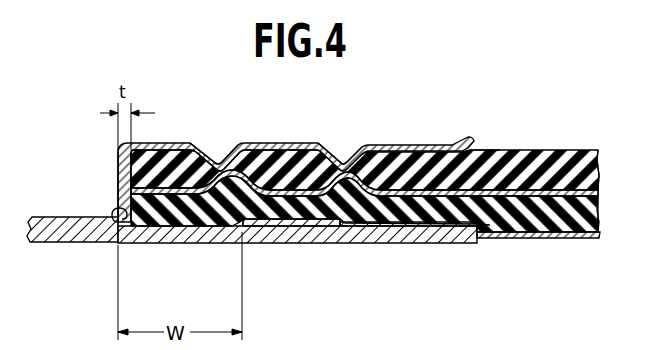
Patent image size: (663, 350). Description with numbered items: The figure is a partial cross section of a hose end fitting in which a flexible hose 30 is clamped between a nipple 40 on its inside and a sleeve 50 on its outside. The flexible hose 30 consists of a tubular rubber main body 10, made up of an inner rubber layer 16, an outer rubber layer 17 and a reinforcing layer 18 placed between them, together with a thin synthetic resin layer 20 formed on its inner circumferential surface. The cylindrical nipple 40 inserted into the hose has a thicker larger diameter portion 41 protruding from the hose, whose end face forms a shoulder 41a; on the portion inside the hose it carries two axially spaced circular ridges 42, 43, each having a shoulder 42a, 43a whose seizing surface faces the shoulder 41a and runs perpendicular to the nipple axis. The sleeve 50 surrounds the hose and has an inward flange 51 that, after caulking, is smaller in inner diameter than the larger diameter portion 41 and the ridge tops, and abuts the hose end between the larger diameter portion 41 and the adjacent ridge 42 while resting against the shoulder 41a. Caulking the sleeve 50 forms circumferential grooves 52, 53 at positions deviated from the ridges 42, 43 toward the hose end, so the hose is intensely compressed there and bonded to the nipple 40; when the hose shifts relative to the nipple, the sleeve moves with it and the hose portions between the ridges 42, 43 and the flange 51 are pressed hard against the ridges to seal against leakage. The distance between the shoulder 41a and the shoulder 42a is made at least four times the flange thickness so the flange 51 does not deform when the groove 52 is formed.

The main body 10 is at (597, 150).
The inner rubber layer 16 is at (483, 224).
The outer rubber layer 17 is at (484, 150).
The reinforcing layer 18 is at (598, 194).
The synthetic resin layer 20 is at (533, 238).
The flexible hose 30 is at (517, 150).
The nipple 40 is at (159, 246).
The larger diameter portion 41 is at (58, 232).
The shoulder 41a is at (116, 214).
The ridge 42 is at (262, 232).
The shoulder 42a is at (232, 226).
The ridge 43 is at (370, 230).
The shoulder 43a is at (337, 222).
The sleeve 50 is at (290, 144).
The inward flange 51 is at (118, 185).
The circumferential groove 52 is at (219, 162).
The circumferential groove 53 is at (347, 160).